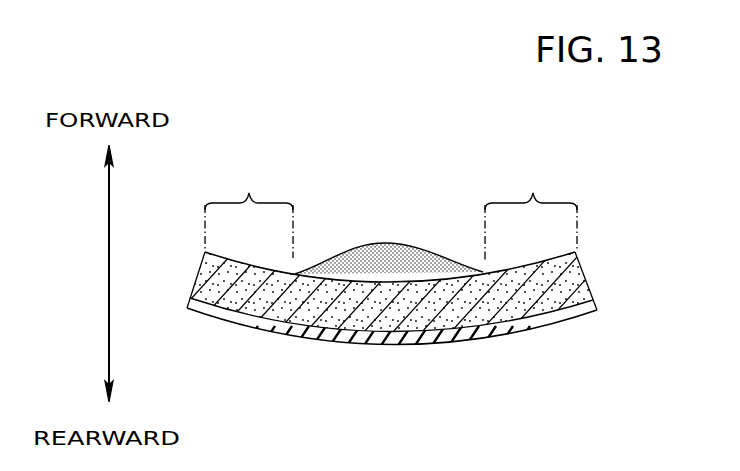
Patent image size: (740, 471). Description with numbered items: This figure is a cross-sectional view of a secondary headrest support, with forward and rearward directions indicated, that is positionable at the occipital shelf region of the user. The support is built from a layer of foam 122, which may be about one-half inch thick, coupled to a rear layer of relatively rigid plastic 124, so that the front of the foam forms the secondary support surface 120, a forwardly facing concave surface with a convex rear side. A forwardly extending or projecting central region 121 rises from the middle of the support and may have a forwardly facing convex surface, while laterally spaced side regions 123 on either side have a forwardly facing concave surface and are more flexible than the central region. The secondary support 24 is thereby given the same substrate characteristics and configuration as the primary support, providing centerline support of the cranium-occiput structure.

The pad 24 is at (368, 243).
The secondary support surface 120 is at (531, 266).
The central region 121 is at (411, 252).
The layer of foam 122 is at (590, 280).
The side regions 123 is at (391, 207).
The layer of relatively rigid plastic 124 is at (589, 312).